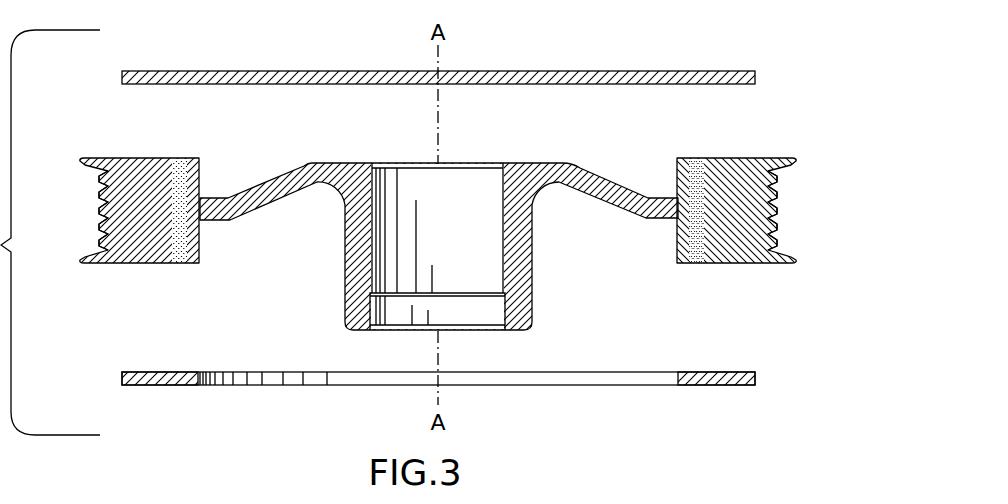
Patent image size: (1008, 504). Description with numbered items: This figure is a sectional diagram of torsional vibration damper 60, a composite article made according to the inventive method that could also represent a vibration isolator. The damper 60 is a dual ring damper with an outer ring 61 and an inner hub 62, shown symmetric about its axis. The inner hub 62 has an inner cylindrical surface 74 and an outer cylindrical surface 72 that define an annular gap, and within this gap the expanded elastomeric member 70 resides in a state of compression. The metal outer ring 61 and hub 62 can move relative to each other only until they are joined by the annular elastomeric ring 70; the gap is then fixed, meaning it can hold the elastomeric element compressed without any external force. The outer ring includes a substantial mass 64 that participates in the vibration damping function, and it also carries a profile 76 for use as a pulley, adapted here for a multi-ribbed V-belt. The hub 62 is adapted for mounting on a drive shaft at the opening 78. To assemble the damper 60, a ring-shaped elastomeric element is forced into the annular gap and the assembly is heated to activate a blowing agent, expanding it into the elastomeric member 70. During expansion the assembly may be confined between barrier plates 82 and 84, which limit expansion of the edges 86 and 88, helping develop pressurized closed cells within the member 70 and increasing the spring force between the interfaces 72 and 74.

The torsional vibration damper 60 is at (135, 189).
The outer ring 61 is at (734, 196).
The inner hub 62 is at (439, 223).
The substantial mass 64 is at (774, 213).
The expanded elastomeric member 70 is at (700, 262).
The outer cylindrical surface 72 is at (695, 159).
The inner cylindrical surface 74 is at (698, 159).
The profile 76 is at (103, 200).
The opening 78 is at (428, 195).
The barrier plate 82 is at (700, 372).
The barrier plate 84 is at (352, 85).
The edge 86 is at (180, 158).
The edge 88 is at (180, 263).